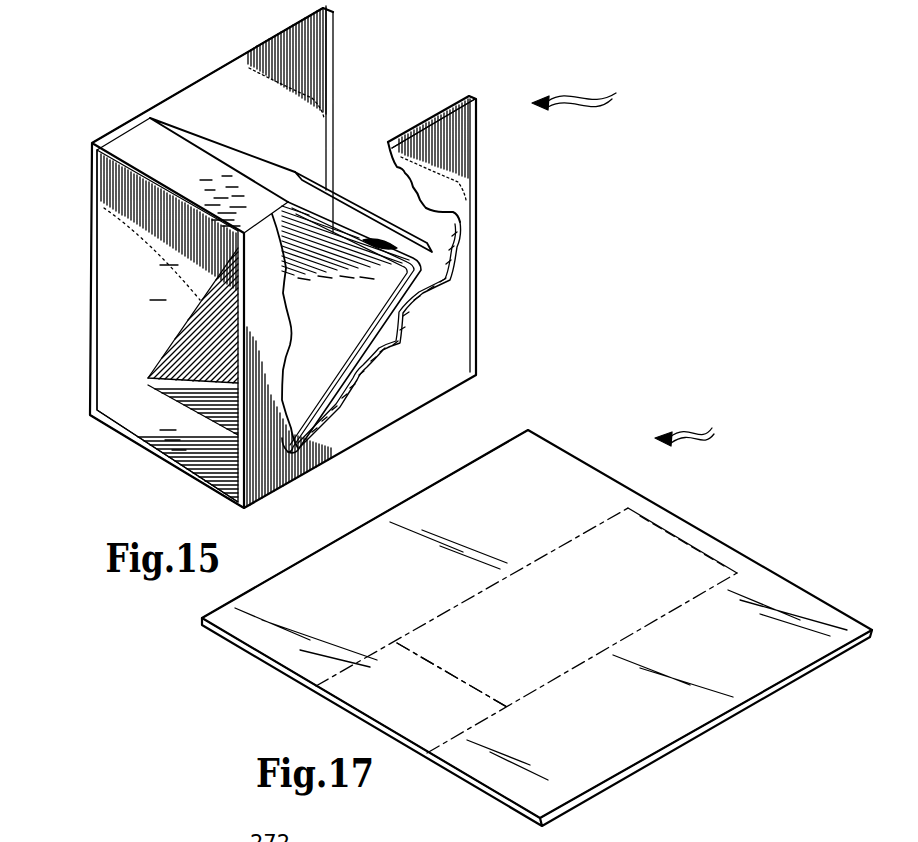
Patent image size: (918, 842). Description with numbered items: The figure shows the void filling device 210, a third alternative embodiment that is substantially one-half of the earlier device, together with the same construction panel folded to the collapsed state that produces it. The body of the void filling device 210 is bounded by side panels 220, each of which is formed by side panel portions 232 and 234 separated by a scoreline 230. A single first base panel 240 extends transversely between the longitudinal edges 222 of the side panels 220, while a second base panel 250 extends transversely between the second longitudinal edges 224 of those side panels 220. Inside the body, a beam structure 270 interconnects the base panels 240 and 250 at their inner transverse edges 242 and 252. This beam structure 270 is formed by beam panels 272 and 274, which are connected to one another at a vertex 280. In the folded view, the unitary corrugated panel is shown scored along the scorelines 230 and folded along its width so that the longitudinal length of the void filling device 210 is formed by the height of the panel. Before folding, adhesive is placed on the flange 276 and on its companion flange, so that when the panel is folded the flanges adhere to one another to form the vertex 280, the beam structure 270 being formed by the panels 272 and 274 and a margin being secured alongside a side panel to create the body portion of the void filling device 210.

In FIG. 15, the void filling device 210 is at (592, 97).
In FIG. 17, the void filling device 210 is at (715, 432).
In FIG. 15, the side panels 220 is at (313, 78).
In FIG. 15, the longitudinal edges 222 is at (198, 82).
In FIG. 15, the second longitudinal edges 224 is at (453, 100).
In FIG. 15, the scoreline 230 is at (163, 243).
In FIG. 15, the side panel portion 232 is at (310, 50).
In FIG. 17, the side panel portion 232 is at (348, 597).
In FIG. 15, the side panel portion 234 is at (133, 355).
In FIG. 17, the side panel portion 234 is at (498, 446).
In FIG. 15, the first base panel 240 is at (170, 150).
In FIG. 17, the first base panel 240 is at (387, 712).
In FIG. 15, the inner transverse edge 242 is at (230, 163).
In FIG. 15, the second base panel 250 is at (168, 433).
In FIG. 15, the inner transverse edge 252 is at (200, 417).
In FIG. 15, the beam structure 270 is at (336, 222).
In FIG. 17, the beam structure 270 is at (537, 628).
In FIG. 15, the beam panel 272 is at (410, 248).
In FIG. 17, the beam panel 272 is at (505, 640).
In FIG. 15, the beam panel 274 is at (327, 335).
In FIG. 17, the flange 276 is at (707, 543).
In FIG. 15, the vertex 280 is at (427, 247).
In FIG. 17, the vertex 280 is at (665, 508).